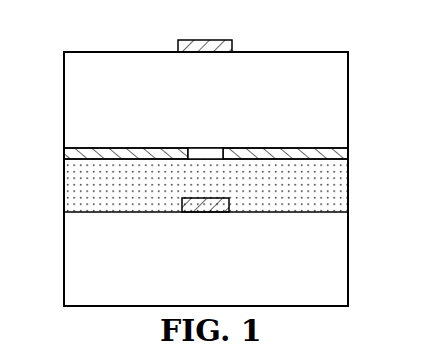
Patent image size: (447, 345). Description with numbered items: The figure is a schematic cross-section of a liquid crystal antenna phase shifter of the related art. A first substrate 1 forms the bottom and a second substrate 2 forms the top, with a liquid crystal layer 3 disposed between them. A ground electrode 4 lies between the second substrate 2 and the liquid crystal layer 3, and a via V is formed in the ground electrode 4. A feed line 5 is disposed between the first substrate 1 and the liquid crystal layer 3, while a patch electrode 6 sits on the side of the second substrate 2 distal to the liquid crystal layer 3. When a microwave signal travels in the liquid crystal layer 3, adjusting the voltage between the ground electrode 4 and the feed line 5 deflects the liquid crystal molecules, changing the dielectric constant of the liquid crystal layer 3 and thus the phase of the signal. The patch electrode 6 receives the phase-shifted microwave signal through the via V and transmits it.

The first substrate 1 is at (339, 258).
The second substrate 2 is at (307, 107).
The liquid crystal layer 3 is at (338, 185).
The ground electrode 4 is at (75, 154).
The via V is at (210, 152).
The feed line 5 is at (229, 207).
The patch electrode 6 is at (232, 42).